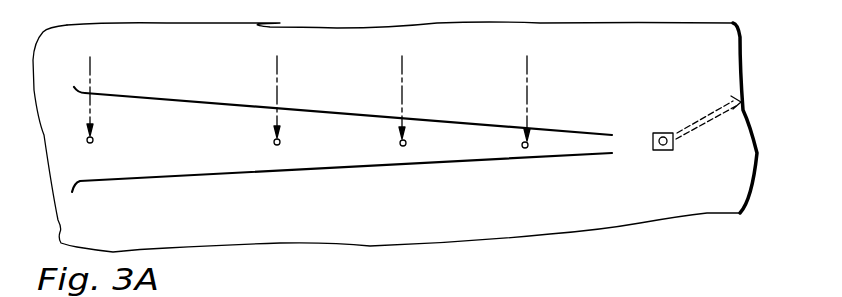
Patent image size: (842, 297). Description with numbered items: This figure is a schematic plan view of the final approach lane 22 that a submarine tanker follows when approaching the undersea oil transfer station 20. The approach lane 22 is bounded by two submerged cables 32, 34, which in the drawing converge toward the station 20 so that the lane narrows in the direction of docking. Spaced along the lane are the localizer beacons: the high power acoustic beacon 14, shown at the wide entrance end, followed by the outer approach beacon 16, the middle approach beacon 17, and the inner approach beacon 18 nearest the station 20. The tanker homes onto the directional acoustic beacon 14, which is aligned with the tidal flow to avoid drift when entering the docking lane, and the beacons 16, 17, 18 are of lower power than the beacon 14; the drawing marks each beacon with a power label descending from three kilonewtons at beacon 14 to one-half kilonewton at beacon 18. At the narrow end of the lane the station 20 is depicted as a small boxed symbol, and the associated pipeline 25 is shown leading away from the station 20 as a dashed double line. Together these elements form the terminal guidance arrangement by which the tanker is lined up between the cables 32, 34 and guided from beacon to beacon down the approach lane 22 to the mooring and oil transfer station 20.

The high power acoustic beacon 14 is at (94, 139).
The outer approach beacon 16 is at (282, 140).
The middle approach beacon 17 is at (408, 141).
The inner approach beacon 18 is at (530, 143).
The undersea oil site station 20 is at (656, 130).
The final approach lane 22 is at (342, 147).
The pipeline 25 is at (717, 110).
The submerged cable 32 is at (217, 103).
The submerged cable 34 is at (223, 173).